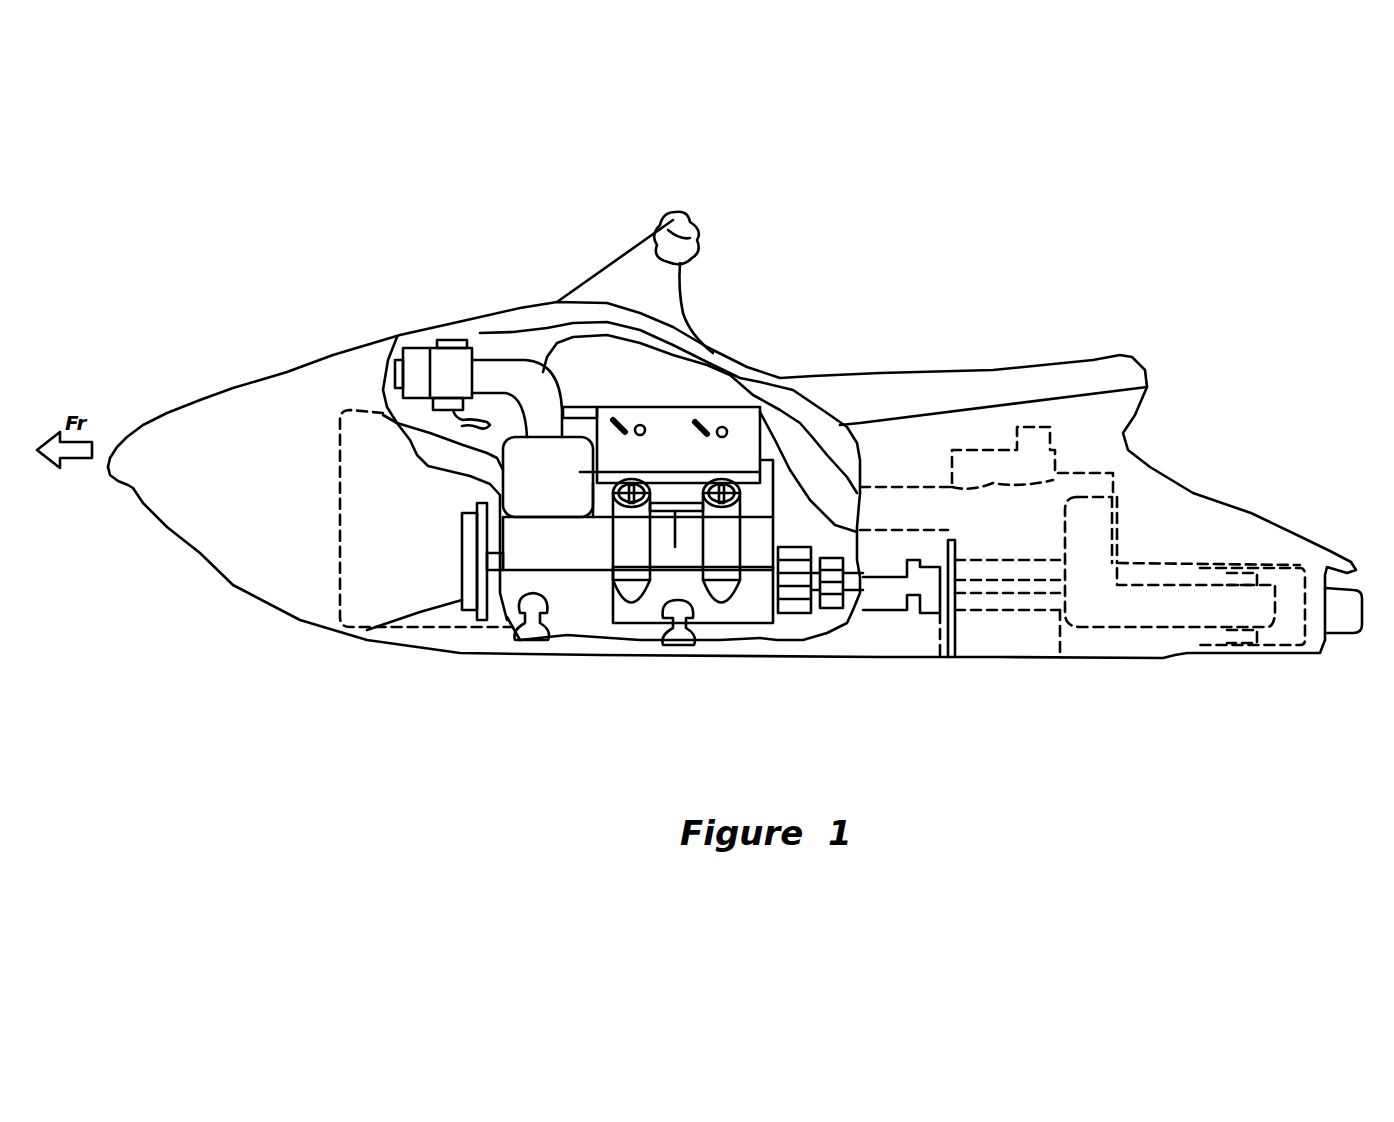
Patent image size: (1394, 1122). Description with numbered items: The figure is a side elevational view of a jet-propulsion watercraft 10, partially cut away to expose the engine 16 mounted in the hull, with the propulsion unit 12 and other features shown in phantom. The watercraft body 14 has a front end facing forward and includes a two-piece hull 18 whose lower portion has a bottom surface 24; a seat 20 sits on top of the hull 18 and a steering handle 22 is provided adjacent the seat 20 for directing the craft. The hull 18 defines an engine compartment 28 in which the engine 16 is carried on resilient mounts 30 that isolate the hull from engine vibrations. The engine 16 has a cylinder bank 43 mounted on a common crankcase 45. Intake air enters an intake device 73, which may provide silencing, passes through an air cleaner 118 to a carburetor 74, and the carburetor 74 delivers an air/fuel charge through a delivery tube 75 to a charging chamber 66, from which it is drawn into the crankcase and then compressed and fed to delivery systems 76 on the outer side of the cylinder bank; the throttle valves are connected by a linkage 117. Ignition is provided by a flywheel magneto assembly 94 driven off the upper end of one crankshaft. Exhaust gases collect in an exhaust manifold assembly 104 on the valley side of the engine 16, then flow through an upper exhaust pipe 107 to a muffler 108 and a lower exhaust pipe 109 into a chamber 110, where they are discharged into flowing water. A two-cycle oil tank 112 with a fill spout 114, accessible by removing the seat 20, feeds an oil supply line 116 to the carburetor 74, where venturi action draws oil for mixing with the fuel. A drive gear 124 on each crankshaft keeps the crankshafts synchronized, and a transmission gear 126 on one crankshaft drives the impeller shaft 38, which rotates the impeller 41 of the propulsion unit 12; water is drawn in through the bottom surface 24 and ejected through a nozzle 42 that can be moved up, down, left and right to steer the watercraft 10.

The watercraft 10 is at (774, 268).
The propulsion unit 12 is at (978, 625).
The watercraft body 14 is at (210, 389).
The engine 16 is at (533, 362).
The hull 18 is at (263, 373).
The seat 20 is at (957, 390).
The steering handle 22 is at (690, 237).
The bottom surface 24 is at (650, 667).
The engine compartment 28 is at (860, 423).
The resilient mounts 30 is at (517, 630).
The impeller shaft 38 is at (885, 590).
The impeller 41 is at (1222, 652).
The nozzle 42 is at (1343, 620).
The cylinder bank 43 is at (670, 427).
The crankcase 45 is at (577, 617).
The charging chamber 66 is at (507, 477).
The intake device 73 is at (392, 374).
The carburetor 74 is at (445, 348).
The delivery tube 75 is at (507, 370).
The delivery systems 76 is at (623, 570).
The flywheel magneto assembly 94 is at (460, 610).
The exhaust manifold assembly 104 is at (643, 377).
The upper exhaust pipe 107 is at (780, 420).
The muffler 108 is at (1123, 480).
The lower exhaust pipe 109 is at (1128, 617).
The chamber 110 is at (1160, 577).
The oil tank 112 is at (973, 447).
The fill spout 114 is at (1050, 427).
The oil supply line 116 is at (487, 428).
The linkage 117 is at (700, 490).
The air cleaner 118 is at (422, 349).
The drive gear 124 is at (793, 613).
The transmission gear 126 is at (833, 608).